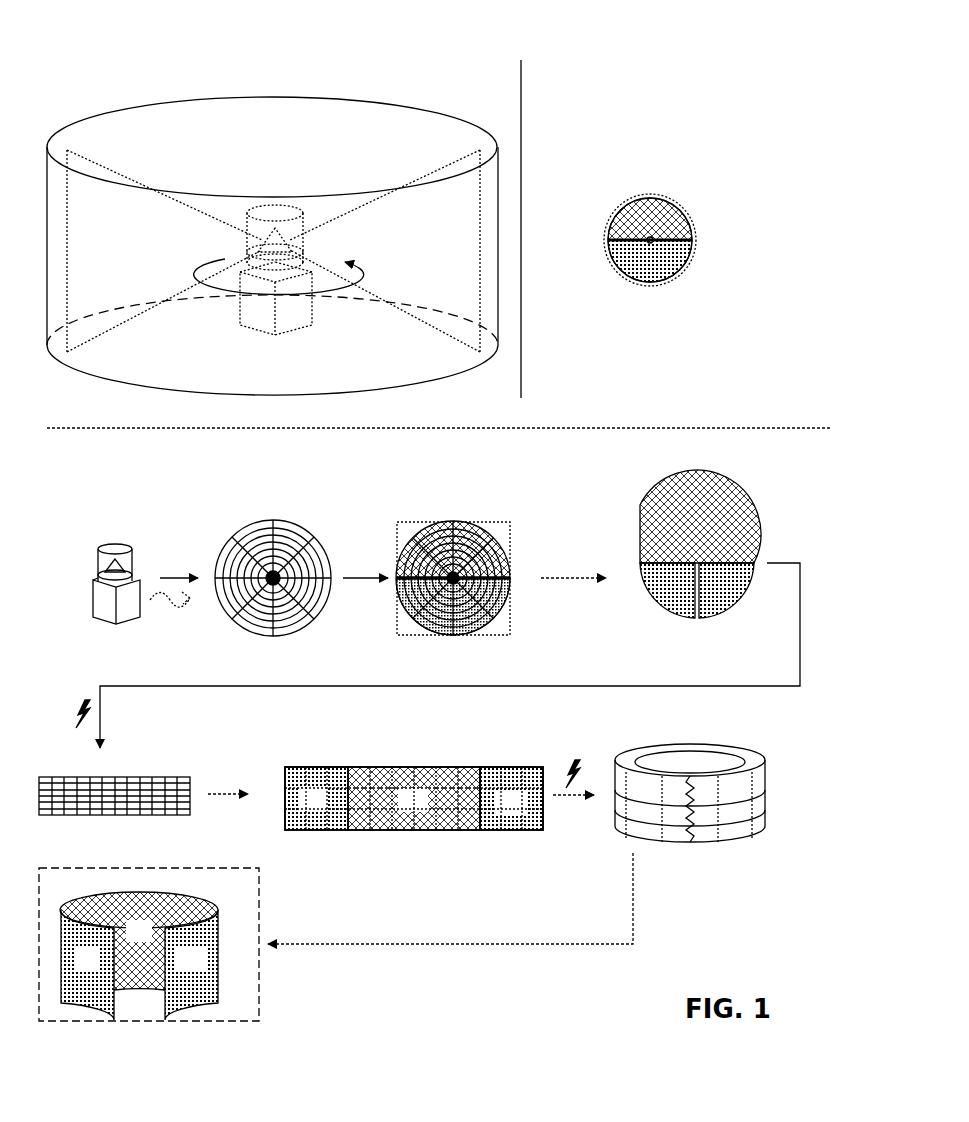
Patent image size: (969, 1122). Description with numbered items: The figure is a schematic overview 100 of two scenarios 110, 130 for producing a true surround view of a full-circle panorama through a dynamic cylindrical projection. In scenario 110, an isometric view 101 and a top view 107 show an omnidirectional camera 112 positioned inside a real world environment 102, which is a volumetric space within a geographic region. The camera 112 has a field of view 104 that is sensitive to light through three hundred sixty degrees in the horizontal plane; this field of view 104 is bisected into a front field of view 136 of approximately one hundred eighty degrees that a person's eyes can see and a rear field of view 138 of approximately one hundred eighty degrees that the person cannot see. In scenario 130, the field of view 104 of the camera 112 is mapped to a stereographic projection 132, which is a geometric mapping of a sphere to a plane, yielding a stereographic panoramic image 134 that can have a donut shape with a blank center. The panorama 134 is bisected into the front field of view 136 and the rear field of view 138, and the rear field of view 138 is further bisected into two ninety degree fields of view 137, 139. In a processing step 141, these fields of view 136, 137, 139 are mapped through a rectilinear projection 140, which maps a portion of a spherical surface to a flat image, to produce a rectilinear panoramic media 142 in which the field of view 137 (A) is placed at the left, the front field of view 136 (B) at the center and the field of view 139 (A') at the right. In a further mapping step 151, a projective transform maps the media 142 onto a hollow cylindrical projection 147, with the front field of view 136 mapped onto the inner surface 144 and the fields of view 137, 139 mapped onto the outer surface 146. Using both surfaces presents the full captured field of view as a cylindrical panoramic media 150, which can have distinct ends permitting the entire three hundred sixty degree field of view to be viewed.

The overview of scenarios 100 is at (438, 218).
The isometric view 101 is at (369, 343).
The real world environment 102 is at (631, 210).
The field of view 104 is at (215, 263).
The top view 107 is at (576, 462).
The scenario 110 is at (284, 215).
The 360 degree camera 112 is at (290, 318).
The scenario 130 is at (422, 735).
The stereographic projection 132 is at (240, 537).
The panoramic image 134 is at (397, 534).
The front field of view 136 is at (672, 222).
The field of view 137 is at (318, 845).
The rear field of view 138 is at (667, 268).
The field of view 139 is at (506, 845).
The rectilinear projection 140 is at (114, 777).
The processing step 141 is at (76, 714).
The rectilinear panoramic media 142 is at (543, 762).
The inner surface 144 is at (635, 758).
The outer surface 146 is at (650, 840).
The cylindrical projection 147 is at (767, 820).
The cylindrical panoramic media 150 is at (262, 1002).
The mapping step 151 is at (578, 768).